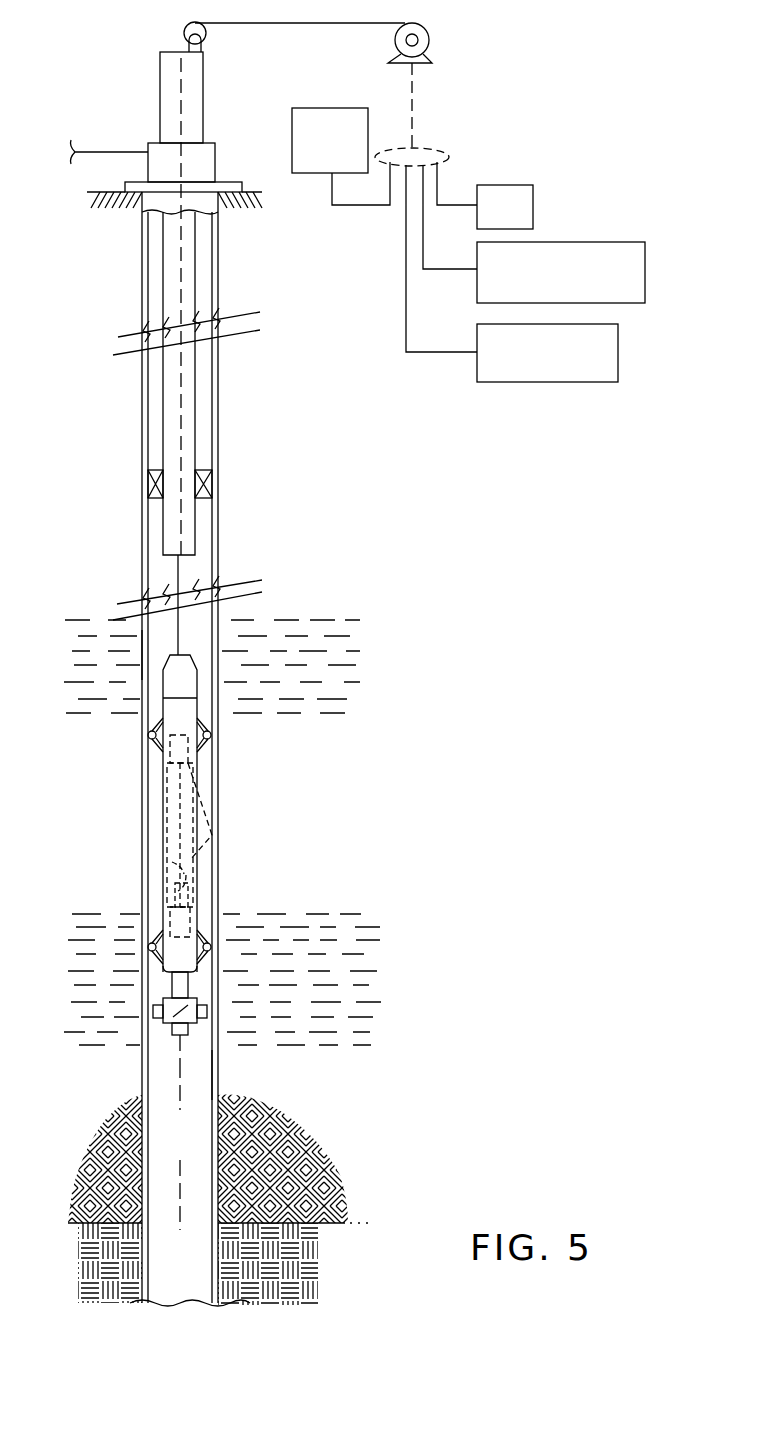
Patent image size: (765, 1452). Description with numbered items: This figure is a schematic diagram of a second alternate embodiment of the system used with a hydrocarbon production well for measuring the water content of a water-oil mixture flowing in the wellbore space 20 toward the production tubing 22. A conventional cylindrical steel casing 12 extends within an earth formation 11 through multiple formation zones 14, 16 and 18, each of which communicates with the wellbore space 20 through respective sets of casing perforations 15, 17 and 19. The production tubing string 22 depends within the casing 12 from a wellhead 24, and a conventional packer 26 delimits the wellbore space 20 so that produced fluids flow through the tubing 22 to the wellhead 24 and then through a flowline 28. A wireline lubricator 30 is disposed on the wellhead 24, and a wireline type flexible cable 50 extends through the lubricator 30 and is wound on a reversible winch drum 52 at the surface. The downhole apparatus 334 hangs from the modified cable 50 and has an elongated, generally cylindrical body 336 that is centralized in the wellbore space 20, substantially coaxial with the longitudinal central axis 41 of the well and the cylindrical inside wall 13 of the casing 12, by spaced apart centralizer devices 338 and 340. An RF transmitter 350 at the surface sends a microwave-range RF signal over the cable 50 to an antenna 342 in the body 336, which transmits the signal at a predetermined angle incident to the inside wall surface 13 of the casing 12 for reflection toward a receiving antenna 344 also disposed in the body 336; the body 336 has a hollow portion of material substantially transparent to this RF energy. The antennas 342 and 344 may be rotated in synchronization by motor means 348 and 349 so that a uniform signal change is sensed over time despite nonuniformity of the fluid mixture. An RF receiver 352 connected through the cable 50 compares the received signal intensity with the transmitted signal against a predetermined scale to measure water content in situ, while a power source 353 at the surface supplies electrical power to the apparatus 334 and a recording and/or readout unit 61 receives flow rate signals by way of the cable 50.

The earth formation 11 is at (125, 214).
The casing 12 is at (218, 385).
The inside wall 13 is at (215, 1075).
The formation zone 14 is at (352, 714).
The casing perforations 15 is at (142, 652).
The formation zone 16 is at (385, 1022).
The casing perforations 17 is at (142, 982).
The formation zone 18 is at (355, 1282).
The casing perforations 19 is at (142, 1268).
The wellbore space 20 is at (195, 1144).
The production tubing string 22 is at (190, 443).
The wellhead 24 is at (215, 160).
The packer 26 is at (213, 487).
The flowline 28 is at (122, 124).
The wireline lubricator 30 is at (203, 70).
The longitudinal central axis 41 is at (182, 1192).
The cable 50 is at (328, 8).
The winch drum 52 is at (430, 33).
The recording and/or readout unit 61 is at (352, 83).
The downhole apparatus 334 is at (204, 807).
The body 336 is at (163, 838).
The centralizer device 338 is at (152, 740).
The centralizer device 340 is at (195, 938).
The antenna 342 is at (165, 790).
The receiving antenna 344 is at (172, 858).
The motor means 348 is at (205, 742).
The motor means 349 is at (182, 916).
The RF transmitter 350 is at (570, 240).
The RF receiver 352 is at (532, 386).
The power source 353 is at (517, 185).